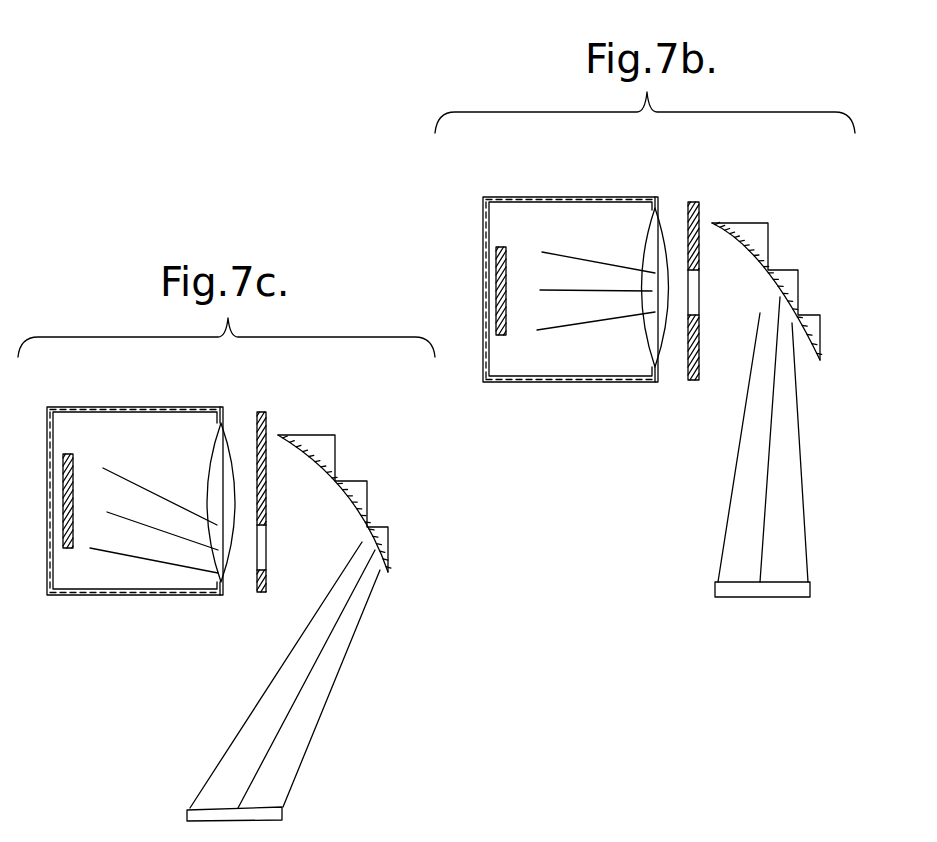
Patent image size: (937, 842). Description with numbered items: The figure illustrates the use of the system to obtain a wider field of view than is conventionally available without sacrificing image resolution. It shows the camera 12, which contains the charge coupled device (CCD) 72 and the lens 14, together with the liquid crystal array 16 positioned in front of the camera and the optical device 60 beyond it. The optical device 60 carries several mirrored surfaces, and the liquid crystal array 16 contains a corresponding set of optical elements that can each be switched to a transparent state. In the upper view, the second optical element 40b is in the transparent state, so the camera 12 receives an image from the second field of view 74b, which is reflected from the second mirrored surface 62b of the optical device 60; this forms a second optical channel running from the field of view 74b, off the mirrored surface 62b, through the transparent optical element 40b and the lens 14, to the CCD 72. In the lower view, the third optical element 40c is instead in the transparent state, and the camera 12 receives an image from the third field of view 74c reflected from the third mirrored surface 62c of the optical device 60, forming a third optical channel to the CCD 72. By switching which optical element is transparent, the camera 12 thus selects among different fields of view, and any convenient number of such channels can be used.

In FIG. 7B, the camera 12 is at (528, 210).
In FIG. 7C, the camera 12 is at (128, 427).
In FIG. 7B, the charge coupled device (CCD) 72 is at (495, 257).
In FIG. 7C, the charge coupled device (CCD) 72 is at (67, 452).
In FIG. 7B, the lens 14 is at (657, 217).
In FIG. 7C, the lens 14 is at (225, 427).
In FIG. 7B, the liquid crystal array 16 is at (695, 205).
In FIG. 7C, the liquid crystal array 16 is at (270, 413).
In FIG. 7B, the second optical element 40b is at (700, 302).
In FIG. 7C, the third optical element 40c is at (258, 560).
In FIG. 7B, the optical device 60 is at (768, 223).
In FIG. 7C, the optical device 60 is at (335, 453).
In FIG. 7B, the second mirrored surface 62b is at (780, 282).
In FIG. 7C, the third mirrored surface 62c is at (388, 543).
In FIG. 7B, the second field of view 74b is at (730, 585).
In FIG. 7C, the third field of view 74c is at (210, 810).